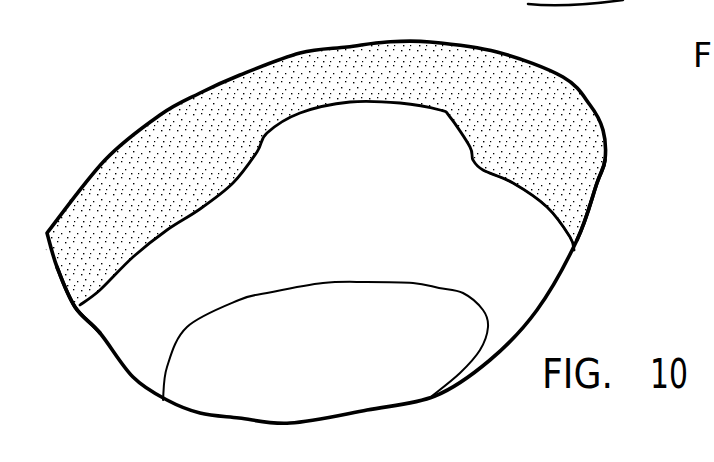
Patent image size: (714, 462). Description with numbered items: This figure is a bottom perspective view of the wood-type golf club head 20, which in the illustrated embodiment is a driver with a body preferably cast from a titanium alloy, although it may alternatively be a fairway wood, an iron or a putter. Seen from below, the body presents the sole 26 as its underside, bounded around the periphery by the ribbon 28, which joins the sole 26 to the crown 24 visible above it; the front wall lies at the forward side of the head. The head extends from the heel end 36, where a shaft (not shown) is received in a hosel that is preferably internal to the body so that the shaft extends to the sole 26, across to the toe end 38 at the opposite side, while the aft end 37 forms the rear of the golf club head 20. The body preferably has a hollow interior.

The golf club head 20 is at (222, 58).
The crown 24 is at (345, 46).
The sole 26 is at (230, 366).
The ribbon 28 is at (522, 236).
The heel end 36 is at (54, 335).
The aft end 37 is at (604, 18).
The toe end 38 is at (627, 212).